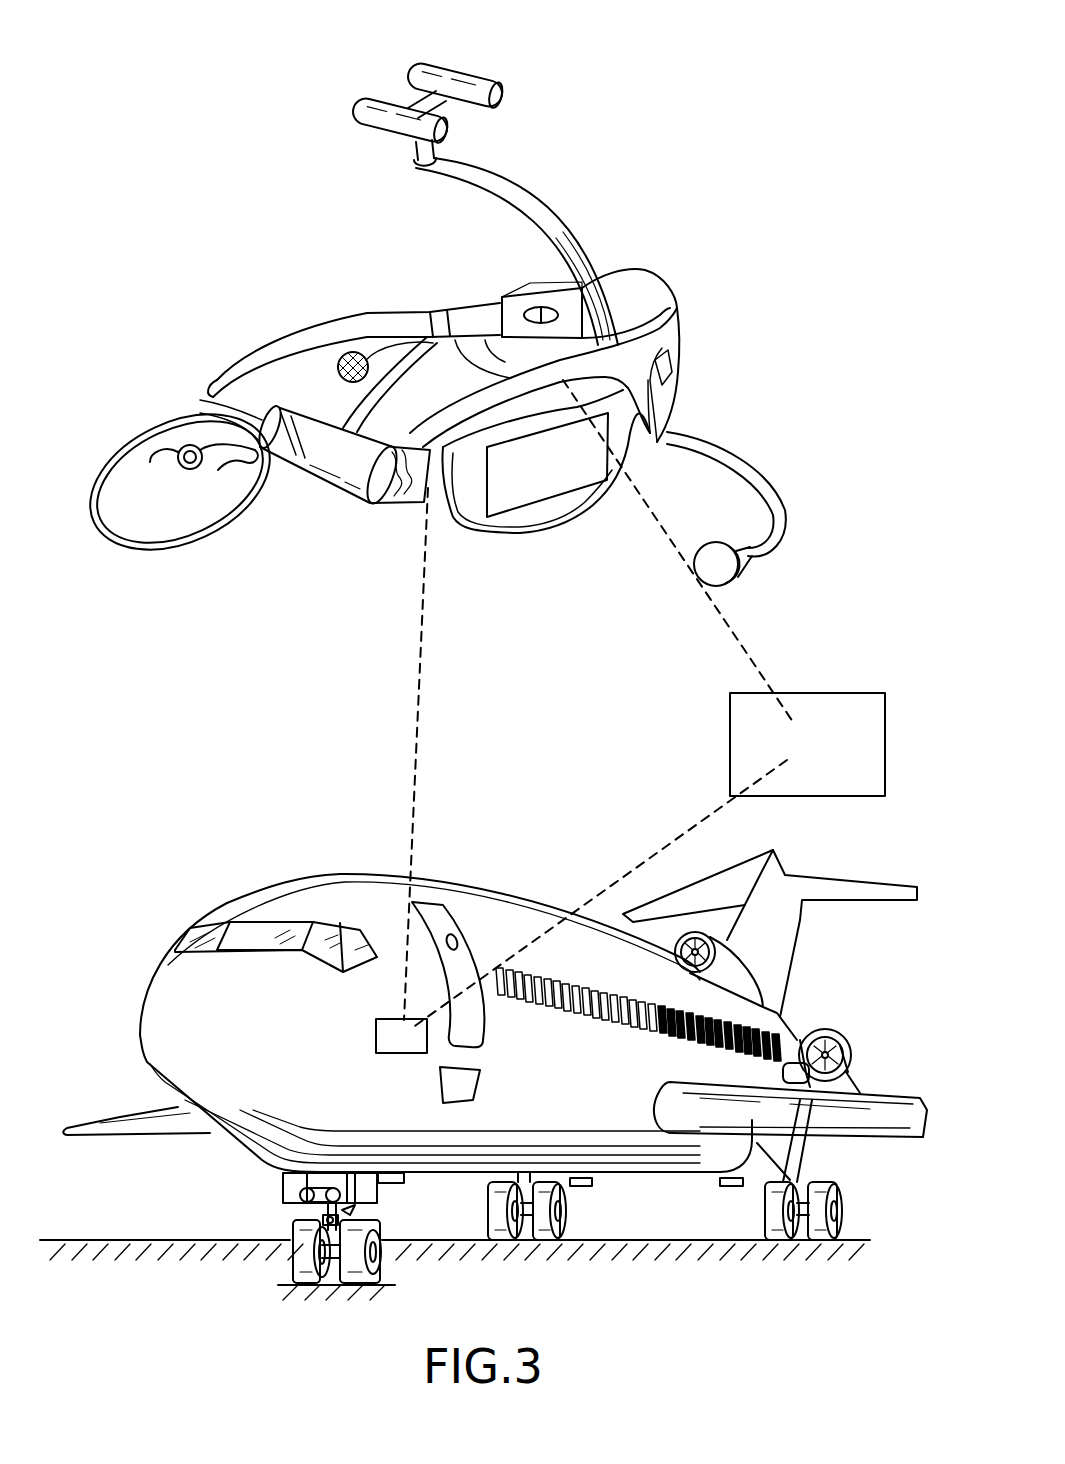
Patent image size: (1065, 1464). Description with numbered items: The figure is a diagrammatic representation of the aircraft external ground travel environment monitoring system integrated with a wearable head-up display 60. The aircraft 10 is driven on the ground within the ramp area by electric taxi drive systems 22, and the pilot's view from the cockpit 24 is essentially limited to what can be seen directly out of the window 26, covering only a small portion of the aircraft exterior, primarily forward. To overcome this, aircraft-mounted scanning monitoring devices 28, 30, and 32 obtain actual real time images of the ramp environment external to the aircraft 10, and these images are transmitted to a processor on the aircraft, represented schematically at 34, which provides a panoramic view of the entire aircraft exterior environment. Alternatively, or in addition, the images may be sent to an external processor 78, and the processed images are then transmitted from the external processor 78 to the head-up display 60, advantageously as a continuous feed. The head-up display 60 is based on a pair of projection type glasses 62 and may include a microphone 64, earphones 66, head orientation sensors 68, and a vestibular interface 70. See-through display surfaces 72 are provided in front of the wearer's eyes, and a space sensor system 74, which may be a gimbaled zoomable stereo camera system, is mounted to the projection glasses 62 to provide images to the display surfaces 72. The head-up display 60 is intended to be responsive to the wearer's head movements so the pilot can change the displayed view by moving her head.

The aircraft 10 is at (812, 995).
The electric taxi drive systems 22 is at (300, 1260).
The cockpit 24 is at (238, 958).
The window 26 is at (212, 932).
The scanning monitoring device 28 is at (400, 1180).
The scanning monitoring device 30 is at (578, 1185).
The scanning monitoring device 32 is at (726, 1185).
The processor 34 is at (395, 1034).
The head-up display 60 is at (342, 237).
The projection type glasses 62 is at (676, 300).
The microphone 64 is at (712, 568).
The earphones 66 is at (353, 354).
The head orientation sensors 68 is at (536, 310).
The vestibular interface 70 is at (233, 468).
The see-through display surfaces 72 is at (684, 371).
The space sensor system 74 is at (468, 71).
The external processor 78 is at (828, 720).